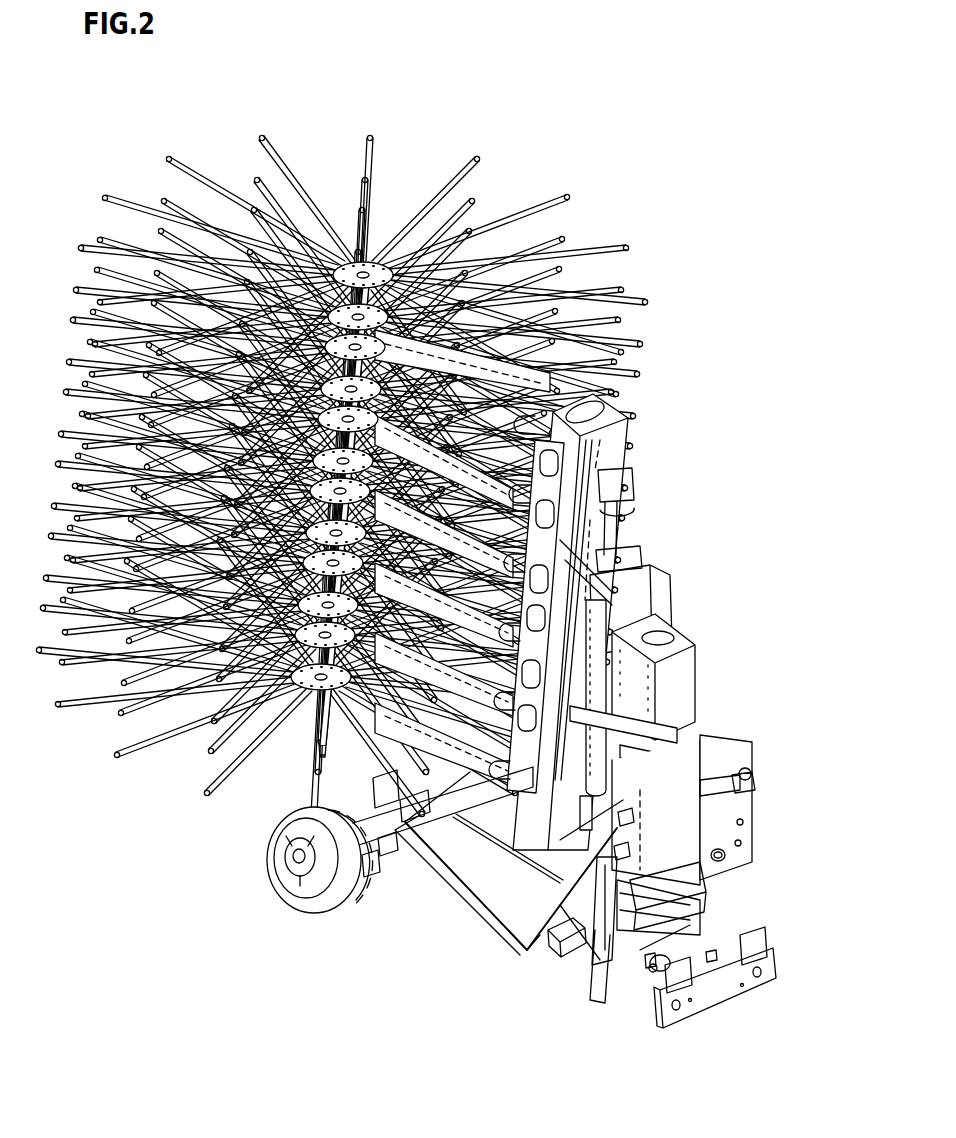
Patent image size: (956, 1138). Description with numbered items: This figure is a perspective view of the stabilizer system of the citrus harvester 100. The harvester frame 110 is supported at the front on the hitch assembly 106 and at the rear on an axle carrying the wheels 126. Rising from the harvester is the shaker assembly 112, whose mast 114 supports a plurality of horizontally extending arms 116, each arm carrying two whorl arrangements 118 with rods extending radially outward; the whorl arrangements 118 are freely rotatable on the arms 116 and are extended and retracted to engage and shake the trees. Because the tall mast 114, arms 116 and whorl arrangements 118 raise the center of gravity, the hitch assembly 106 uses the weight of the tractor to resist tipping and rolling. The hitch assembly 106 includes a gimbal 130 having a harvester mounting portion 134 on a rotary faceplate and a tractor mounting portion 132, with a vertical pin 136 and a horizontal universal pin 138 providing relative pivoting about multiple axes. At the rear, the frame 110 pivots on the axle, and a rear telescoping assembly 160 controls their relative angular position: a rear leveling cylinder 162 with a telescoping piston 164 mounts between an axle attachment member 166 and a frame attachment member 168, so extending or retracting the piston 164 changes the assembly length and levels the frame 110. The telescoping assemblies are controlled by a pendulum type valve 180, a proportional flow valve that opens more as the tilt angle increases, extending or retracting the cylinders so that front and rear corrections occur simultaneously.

The harvester 100 is at (693, 357).
The hitch assembly 106 is at (753, 870).
The harvester frame 110 is at (492, 875).
The shaker assembly 112 is at (218, 830).
The mast 114 is at (615, 440).
The arms 116 is at (490, 457).
The whorl arrangements 118 is at (512, 113).
The wheels 126 is at (323, 908).
The gimbal 130 is at (553, 924).
The tractor mounting portion 132 is at (768, 973).
The harvester mounting portion 134 is at (648, 965).
The vertical pin 136 is at (712, 953).
The horizontal universal pin 138 is at (653, 970).
The rear telescoping assembly 160 is at (397, 907).
The rear leveling cylinder 162 is at (400, 803).
The piston 164 is at (387, 848).
The axle attachment member 166 is at (377, 873).
The frame attachment member 168 is at (448, 783).
The pendulum type valve 180 is at (740, 773).